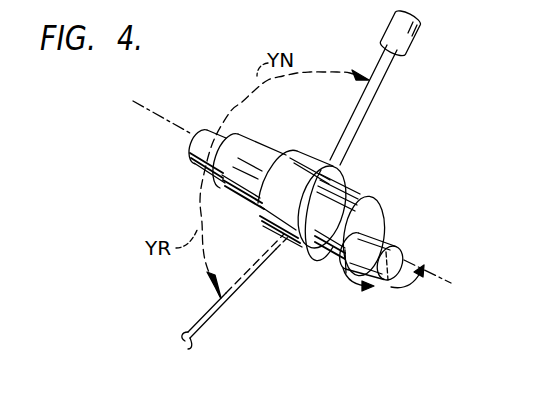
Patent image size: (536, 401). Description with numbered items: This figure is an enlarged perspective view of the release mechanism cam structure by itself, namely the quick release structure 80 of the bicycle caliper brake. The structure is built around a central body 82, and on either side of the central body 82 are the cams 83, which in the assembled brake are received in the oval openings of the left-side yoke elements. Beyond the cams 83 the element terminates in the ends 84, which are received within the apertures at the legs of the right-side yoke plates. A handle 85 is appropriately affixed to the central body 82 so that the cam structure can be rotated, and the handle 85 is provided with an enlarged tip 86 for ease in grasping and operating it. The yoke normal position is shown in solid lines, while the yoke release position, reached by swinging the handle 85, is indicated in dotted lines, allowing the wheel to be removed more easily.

The quick release structure 80 is at (380, 143).
The central body 82 is at (301, 190).
The cams 83 is at (258, 171).
The ends of the quick release cam element 84 is at (203, 145).
The handle 85 is at (378, 89).
The enlarged tip 86 is at (418, 38).